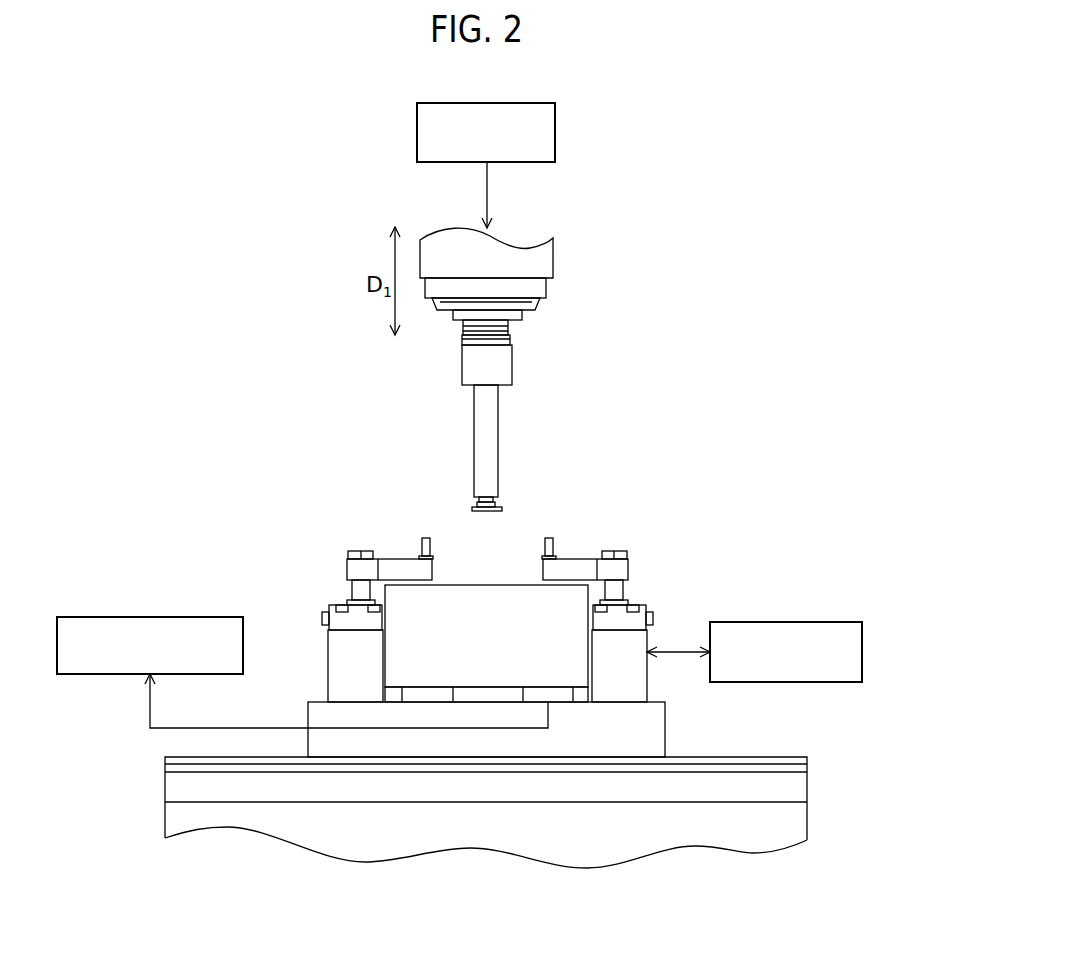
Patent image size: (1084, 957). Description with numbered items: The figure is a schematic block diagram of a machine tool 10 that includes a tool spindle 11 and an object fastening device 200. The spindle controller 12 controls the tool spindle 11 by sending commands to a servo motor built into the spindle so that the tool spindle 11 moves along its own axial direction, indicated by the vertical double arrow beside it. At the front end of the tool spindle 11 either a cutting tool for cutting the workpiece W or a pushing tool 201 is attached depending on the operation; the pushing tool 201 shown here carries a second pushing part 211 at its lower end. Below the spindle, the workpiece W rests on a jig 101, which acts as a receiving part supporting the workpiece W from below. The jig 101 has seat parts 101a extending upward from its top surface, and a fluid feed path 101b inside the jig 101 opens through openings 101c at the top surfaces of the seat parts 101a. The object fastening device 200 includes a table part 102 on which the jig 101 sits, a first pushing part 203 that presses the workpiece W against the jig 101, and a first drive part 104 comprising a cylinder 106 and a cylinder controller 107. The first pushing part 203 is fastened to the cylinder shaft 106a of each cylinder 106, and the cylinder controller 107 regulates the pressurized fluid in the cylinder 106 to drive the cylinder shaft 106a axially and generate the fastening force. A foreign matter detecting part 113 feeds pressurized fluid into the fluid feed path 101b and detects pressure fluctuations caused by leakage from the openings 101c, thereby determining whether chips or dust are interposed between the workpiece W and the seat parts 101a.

The machine tool 10 is at (778, 69).
The tool spindle 11 is at (555, 258).
The spindle controller 12 is at (557, 142).
The object fastening device 200 is at (709, 272).
The pushing tool 201 is at (513, 363).
The second pushing part 211 is at (503, 502).
The first pushing part 203 is at (398, 568).
The first drive part 104 is at (833, 527).
The cylinder 106 is at (328, 664).
The cylinder shaft 106a is at (358, 590).
The cylinder controller 107 is at (778, 622).
The foreign matter detecting part 113 is at (112, 617).
The workpiece W is at (493, 593).
The jig 101 is at (665, 727).
The seat part 101a is at (527, 697).
The fluid feed path 101b is at (343, 727).
The opening 101c is at (425, 728).
The table part 102 is at (430, 835).